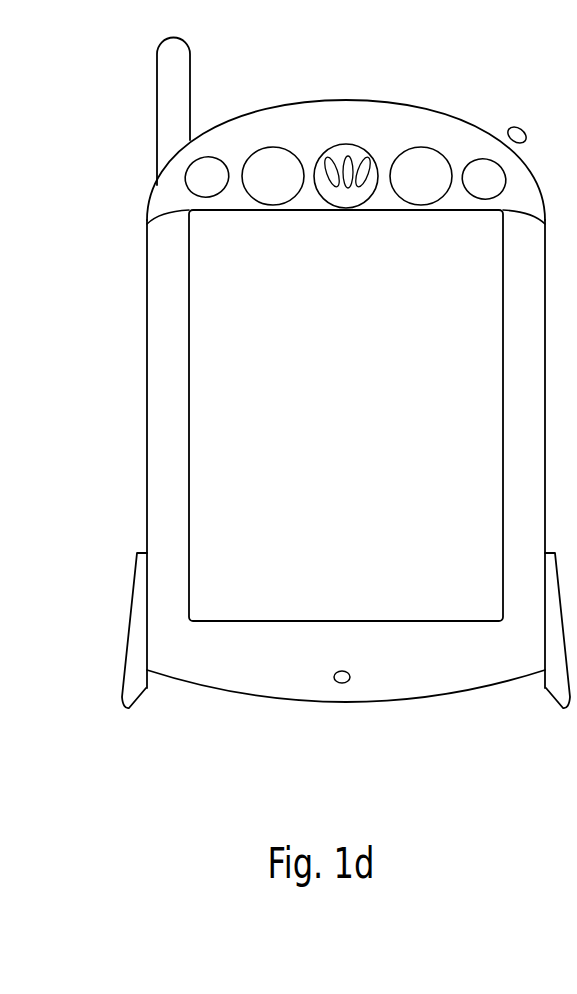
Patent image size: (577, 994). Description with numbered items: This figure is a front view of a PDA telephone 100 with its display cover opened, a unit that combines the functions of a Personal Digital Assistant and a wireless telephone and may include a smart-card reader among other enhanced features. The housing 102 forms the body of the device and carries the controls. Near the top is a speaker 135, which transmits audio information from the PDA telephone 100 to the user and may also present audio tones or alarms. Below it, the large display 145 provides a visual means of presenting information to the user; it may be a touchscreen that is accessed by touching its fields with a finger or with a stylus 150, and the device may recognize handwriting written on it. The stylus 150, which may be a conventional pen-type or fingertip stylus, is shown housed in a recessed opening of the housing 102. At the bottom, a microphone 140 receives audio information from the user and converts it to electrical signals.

The PDA telephone 100 is at (3, 341).
The housing 102 is at (152, 393).
The speaker 135 is at (351, 143).
The microphone 140 is at (341, 684).
The display 145 is at (363, 567).
The stylus 150 is at (516, 138).